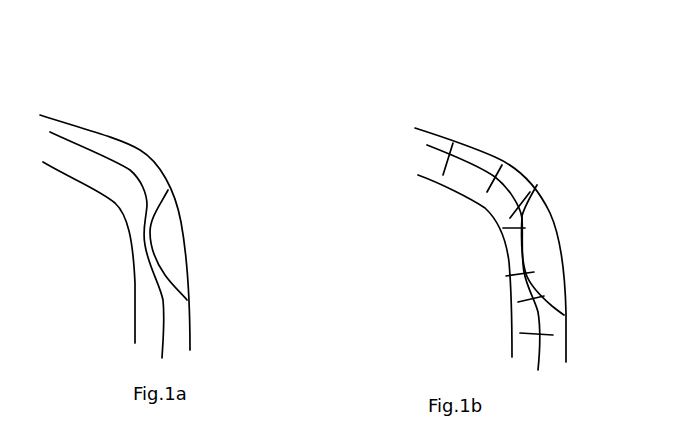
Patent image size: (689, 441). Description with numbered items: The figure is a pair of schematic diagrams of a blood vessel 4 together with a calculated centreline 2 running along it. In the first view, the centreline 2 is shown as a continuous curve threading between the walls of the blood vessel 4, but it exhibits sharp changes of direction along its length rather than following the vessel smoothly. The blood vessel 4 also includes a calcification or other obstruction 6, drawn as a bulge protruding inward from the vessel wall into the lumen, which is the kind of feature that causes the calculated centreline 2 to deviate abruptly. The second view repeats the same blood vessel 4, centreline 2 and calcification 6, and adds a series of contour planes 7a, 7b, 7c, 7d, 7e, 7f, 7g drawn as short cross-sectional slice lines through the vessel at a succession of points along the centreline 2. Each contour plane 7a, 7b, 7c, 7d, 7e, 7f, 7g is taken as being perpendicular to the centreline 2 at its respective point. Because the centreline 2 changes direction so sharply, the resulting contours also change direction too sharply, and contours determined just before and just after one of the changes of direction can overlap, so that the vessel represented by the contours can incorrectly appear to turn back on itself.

In FIG. 1A, the centreline 2 is at (72, 137).
In FIG. 1B, the centreline 2 is at (436, 146).
In FIG. 1A, the blood vessel 4 is at (127, 143).
In FIG. 1B, the blood vessel 4 is at (488, 148).
In FIG. 1A, the calcification or other obstruction 6 is at (172, 238).
In FIG. 1B, the calcification or other obstruction 6 is at (536, 246).
In FIG. 1B, the contour plane 7a is at (444, 174).
In FIG. 1B, the contour plane 7b is at (488, 191).
In FIG. 1B, the contour plane 7c is at (502, 211).
In FIG. 1B, the contour plane 7d is at (505, 236).
In FIG. 1B, the contour plane 7e is at (528, 273).
In FIG. 1B, the contour plane 7f is at (537, 298).
In FIG. 1B, the contour plane 7g is at (533, 333).